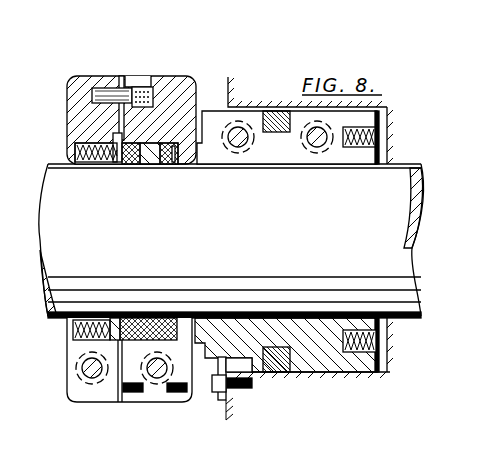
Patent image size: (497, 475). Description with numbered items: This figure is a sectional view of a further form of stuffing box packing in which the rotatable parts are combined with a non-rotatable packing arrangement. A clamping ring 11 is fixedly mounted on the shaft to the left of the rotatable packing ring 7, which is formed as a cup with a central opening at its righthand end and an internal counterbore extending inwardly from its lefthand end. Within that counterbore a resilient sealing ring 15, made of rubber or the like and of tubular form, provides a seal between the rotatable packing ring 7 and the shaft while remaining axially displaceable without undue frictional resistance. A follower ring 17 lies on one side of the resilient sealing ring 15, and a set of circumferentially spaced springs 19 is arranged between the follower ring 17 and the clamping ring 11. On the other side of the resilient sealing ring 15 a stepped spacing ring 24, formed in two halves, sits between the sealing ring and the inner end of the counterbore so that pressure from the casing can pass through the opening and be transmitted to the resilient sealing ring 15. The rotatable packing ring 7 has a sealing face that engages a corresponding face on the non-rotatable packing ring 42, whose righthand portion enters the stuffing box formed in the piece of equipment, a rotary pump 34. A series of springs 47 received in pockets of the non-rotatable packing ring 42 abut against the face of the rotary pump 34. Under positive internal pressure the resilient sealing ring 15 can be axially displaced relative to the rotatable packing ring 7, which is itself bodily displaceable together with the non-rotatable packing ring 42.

The clamping ring 11 is at (80, 86).
The rotatable packing ring 7 is at (158, 93).
The springs 19 is at (95, 168).
The follower ring 17 is at (130, 168).
The resilient sealing ring 15 is at (149, 168).
The stepped spacing ring 24 is at (176, 168).
The rotary pump 34 is at (272, 92).
The non-rotatable packing ring 42 is at (273, 157).
The springs 47 is at (387, 137).